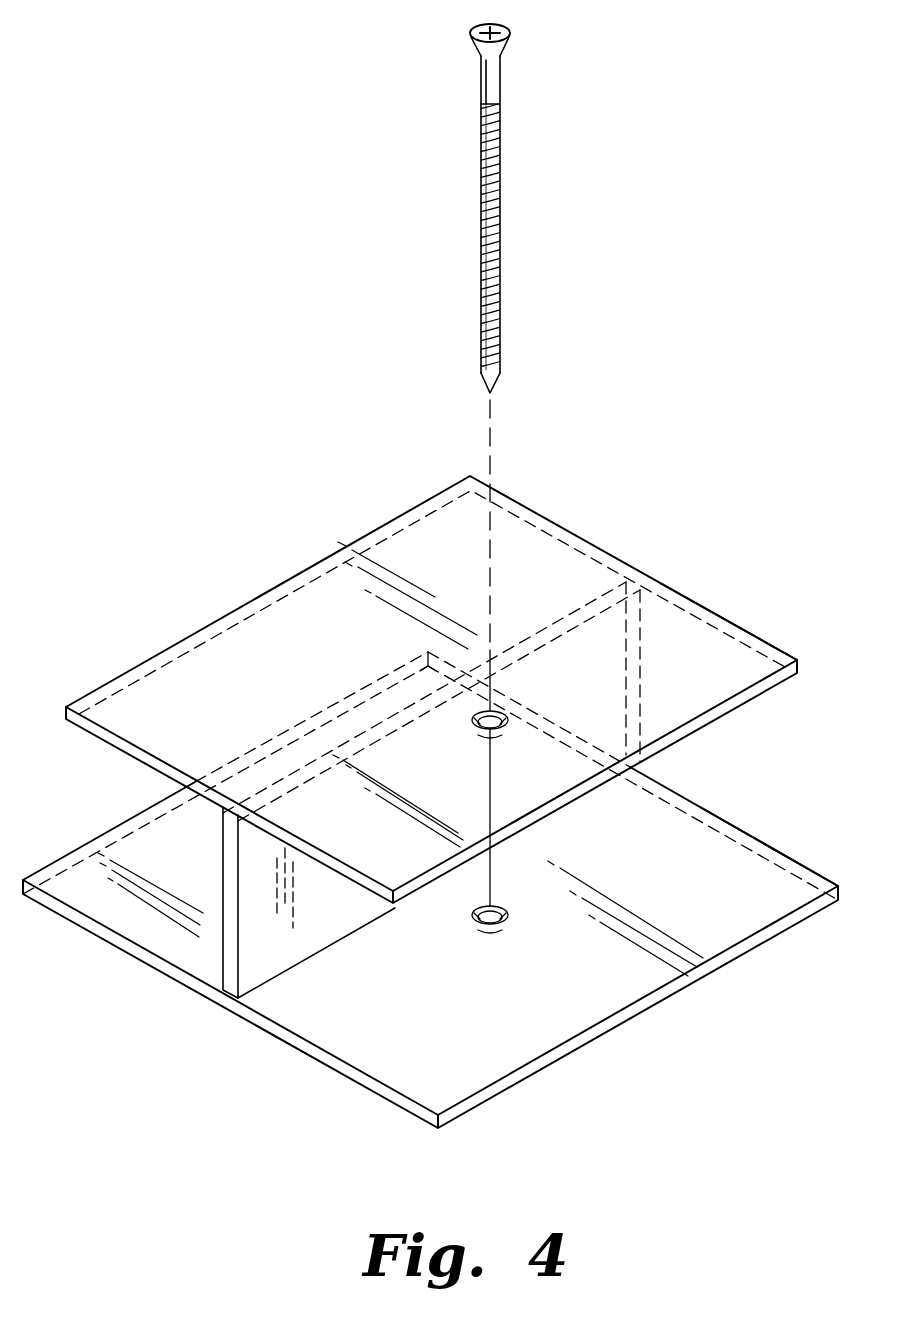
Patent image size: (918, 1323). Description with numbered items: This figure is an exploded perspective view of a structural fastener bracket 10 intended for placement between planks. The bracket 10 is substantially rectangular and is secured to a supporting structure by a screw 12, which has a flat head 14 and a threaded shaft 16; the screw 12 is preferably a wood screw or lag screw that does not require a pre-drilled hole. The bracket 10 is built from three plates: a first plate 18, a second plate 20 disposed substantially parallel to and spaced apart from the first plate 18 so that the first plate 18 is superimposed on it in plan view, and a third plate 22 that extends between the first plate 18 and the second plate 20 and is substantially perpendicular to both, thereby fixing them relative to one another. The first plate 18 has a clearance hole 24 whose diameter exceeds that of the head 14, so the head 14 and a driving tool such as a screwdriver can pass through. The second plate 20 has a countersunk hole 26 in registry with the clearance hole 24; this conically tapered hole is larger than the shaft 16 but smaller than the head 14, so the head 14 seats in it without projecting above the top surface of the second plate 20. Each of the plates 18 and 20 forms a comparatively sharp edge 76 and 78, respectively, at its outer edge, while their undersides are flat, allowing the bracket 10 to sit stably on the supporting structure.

The structural fastener bracket 10 is at (774, 519).
The screw 12 is at (530, 196).
The flat head 14 is at (510, 33).
The threaded shaft 16 is at (481, 221).
The first plate 18 is at (466, 689).
The second plate 20 is at (436, 890).
The third plate 22 is at (338, 913).
The clearance hole 24 is at (473, 725).
The countersunk hole 26 is at (506, 920).
The sharp edge 76 is at (780, 651).
The sharp edge 78 is at (773, 850).